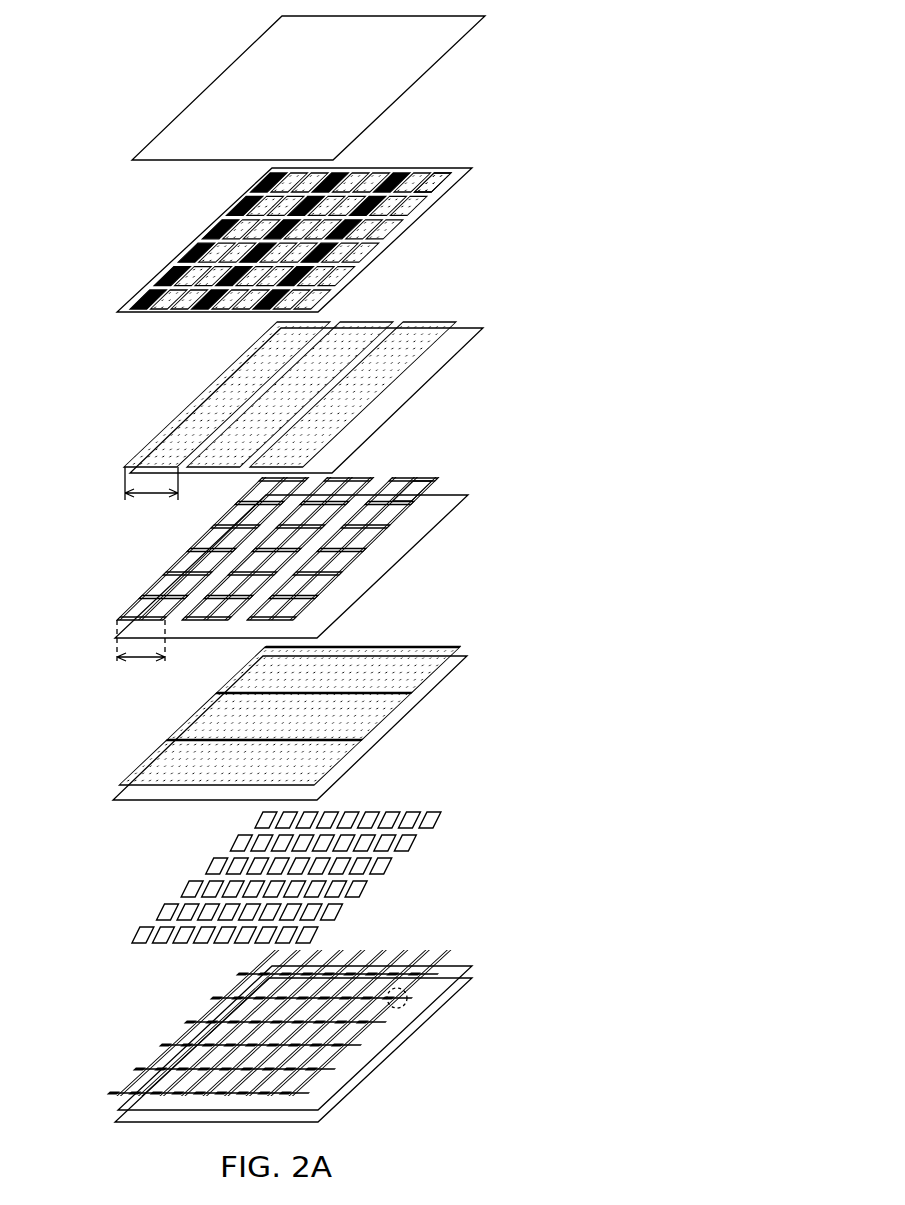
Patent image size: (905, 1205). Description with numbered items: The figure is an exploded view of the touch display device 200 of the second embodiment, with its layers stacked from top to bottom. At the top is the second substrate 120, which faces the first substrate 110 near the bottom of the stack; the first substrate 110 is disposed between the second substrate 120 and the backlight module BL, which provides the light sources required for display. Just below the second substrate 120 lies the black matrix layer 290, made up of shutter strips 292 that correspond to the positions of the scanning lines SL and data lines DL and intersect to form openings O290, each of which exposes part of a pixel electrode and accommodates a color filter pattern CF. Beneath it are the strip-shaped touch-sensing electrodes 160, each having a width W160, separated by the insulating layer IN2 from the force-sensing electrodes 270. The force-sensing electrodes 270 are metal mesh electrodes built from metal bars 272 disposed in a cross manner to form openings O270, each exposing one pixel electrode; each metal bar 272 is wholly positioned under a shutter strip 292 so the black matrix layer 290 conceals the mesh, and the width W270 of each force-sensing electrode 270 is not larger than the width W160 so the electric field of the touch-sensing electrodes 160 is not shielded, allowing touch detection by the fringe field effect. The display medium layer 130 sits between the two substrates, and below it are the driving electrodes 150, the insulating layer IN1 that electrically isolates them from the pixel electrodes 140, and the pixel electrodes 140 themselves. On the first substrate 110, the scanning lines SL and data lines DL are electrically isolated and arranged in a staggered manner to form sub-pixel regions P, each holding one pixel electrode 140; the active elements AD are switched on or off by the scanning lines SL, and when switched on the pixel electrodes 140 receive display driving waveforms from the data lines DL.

The second substrate 120 is at (380, 86).
The black matrix layer 290 is at (248, 241).
The shutter strips 292 is at (170, 268).
The openings O290 is at (443, 175).
The color filter pattern CF is at (375, 256).
The touch-sensing electrodes 160 is at (200, 412).
The insulating layer IN2 is at (410, 390).
The width of touch-sensing electrode W160 is at (140, 500).
The display medium layer 130 is at (382, 563).
The force-sensing electrodes 270 is at (237, 548).
The metal bars 272 is at (163, 583).
The openings O270 is at (428, 475).
The width of force-sensing electrode W270 is at (142, 654).
The driving electrodes 150 is at (369, 716).
The insulating layer IN1 is at (310, 793).
The pixel electrodes 140 is at (377, 868).
The first substrate 110 is at (120, 1104).
The backlight module BL is at (125, 1120).
The data lines DL is at (445, 953).
The scanning lines SL is at (443, 974).
The active elements AD is at (407, 998).
The sub-pixel regions P is at (323, 1030).
The touch display device 200 is at (296, 573).